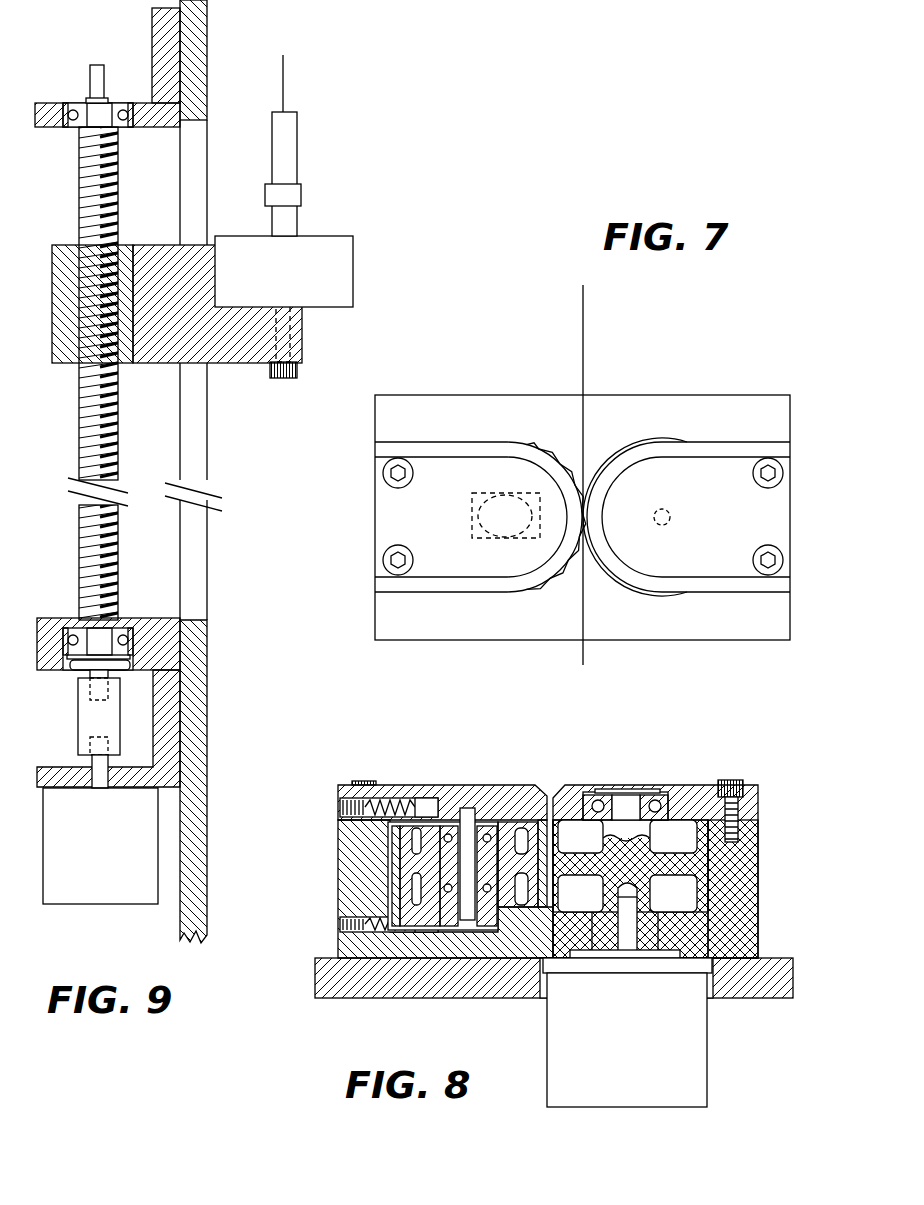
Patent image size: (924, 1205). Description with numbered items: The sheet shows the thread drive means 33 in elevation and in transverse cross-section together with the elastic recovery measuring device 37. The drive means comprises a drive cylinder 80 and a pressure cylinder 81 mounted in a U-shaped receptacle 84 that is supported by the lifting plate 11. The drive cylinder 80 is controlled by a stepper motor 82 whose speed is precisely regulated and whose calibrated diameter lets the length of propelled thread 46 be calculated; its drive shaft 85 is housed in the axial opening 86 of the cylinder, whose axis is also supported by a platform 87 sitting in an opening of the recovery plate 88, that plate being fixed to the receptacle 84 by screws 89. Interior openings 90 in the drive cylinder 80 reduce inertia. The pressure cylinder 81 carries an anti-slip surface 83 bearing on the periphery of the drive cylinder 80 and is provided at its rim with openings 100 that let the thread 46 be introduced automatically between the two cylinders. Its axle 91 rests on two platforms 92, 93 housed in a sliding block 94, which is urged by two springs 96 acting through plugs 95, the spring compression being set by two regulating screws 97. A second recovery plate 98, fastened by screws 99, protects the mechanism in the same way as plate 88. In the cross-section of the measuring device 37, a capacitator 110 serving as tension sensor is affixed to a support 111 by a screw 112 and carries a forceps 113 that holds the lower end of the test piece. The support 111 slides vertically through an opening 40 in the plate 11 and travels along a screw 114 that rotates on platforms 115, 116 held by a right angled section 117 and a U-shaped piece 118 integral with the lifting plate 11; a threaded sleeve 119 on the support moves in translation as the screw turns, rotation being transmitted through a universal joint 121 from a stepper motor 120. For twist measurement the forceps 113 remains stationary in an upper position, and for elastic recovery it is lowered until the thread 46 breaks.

In FIG. 9, the lifting plate 11 is at (207, 17).
In FIG. 8, the lifting plate 11 is at (328, 987).
In FIG. 7, the wire feed assembly 33 is at (676, 386).
In FIG. 8, the wire feed assembly 33 is at (604, 781).
In FIG. 9, the device 37 is at (362, 230).
In FIG. 9, the opening 40 is at (207, 150).
In FIG. 9, the thread 46 is at (284, 72).
In FIG. 7, the thread 46 is at (584, 300).
In FIG. 7, the drive cylinder 80 is at (628, 452).
In FIG. 8, the drive cylinder 80 is at (698, 826).
In FIG. 7, the pressure cylinder 81 is at (541, 450).
In FIG. 8, the pressure cylinder 81 is at (513, 820).
In FIG. 8, the stepper motor 82 is at (697, 1054).
In FIG. 8, the anti-slip surface 83 is at (543, 828).
In FIG. 8, the U-shaped receptacle 84 is at (346, 852).
In FIG. 7, the drive shaft 85 is at (672, 517).
In FIG. 8, the drive shaft 85 is at (630, 952).
In FIG. 8, the axial opening 86 is at (632, 890).
In FIG. 8, the platform 87 is at (640, 795).
In FIG. 7, the recovery plate 88 is at (708, 576).
In FIG. 8, the recovery plate 88 is at (752, 800).
In FIG. 7, the screws 89 is at (768, 458).
In FIG. 8, the screws 89 is at (730, 784).
In FIG. 8, the interior openings 90 is at (580, 845).
In FIG. 8, the axle 91 is at (462, 808).
In FIG. 8, the platform 92 is at (446, 822).
In FIG. 8, the platform 93 is at (446, 892).
In FIG. 7, the sliding block 94 is at (478, 516).
In FIG. 8, the sliding block 94 is at (486, 822).
In FIG. 8, the plugs 95 is at (421, 806).
In FIG. 8, the springs 96 is at (396, 798).
In FIG. 8, the regulating screws 97 is at (340, 810).
In FIG. 7, the recovery plate 98 is at (462, 566).
In FIG. 8, the recovery plate 98 is at (346, 790).
In FIG. 7, the screws 99 is at (398, 458).
In FIG. 8, the screws 99 is at (357, 780).
In FIG. 7, the openings 100 is at (554, 582).
In FIG. 9, the capacitator 110 is at (345, 250).
In FIG. 9, the support 111 is at (232, 356).
In FIG. 9, the screw 112 is at (284, 378).
In FIG. 9, the forceps 113 is at (301, 195).
In FIG. 9, the screw 114 is at (88, 192).
In FIG. 9, the platform 115 is at (72, 104).
In FIG. 9, the platform 116 is at (64, 619).
In FIG. 9, the right angled section 117 is at (158, 25).
In FIG. 9, the U-shaped piece 118 is at (157, 625).
In FIG. 9, the threaded sleeve 119 is at (126, 362).
In FIG. 9, the motor 120 is at (104, 895).
In FIG. 9, the universal joint 121 is at (88, 720).